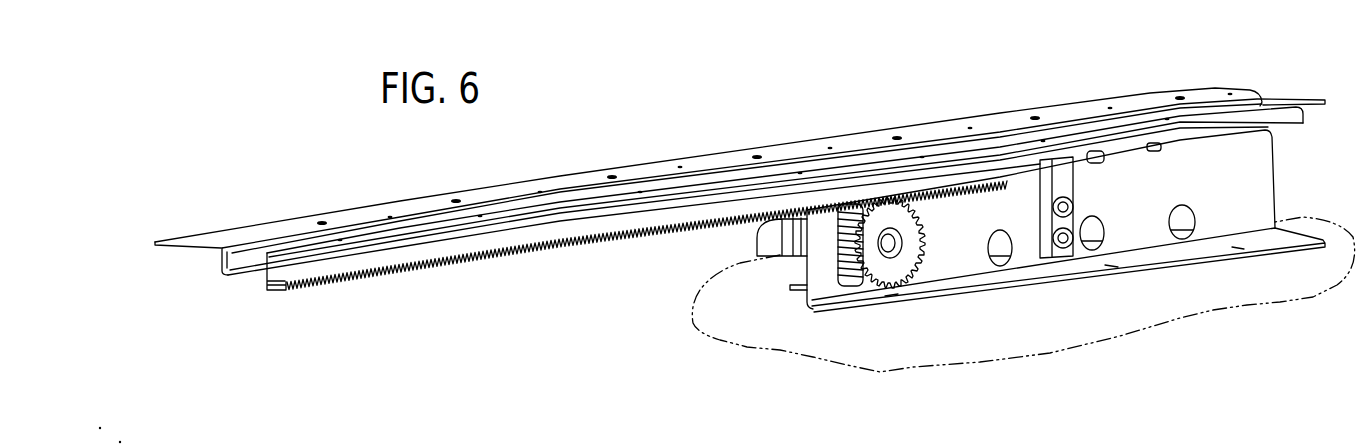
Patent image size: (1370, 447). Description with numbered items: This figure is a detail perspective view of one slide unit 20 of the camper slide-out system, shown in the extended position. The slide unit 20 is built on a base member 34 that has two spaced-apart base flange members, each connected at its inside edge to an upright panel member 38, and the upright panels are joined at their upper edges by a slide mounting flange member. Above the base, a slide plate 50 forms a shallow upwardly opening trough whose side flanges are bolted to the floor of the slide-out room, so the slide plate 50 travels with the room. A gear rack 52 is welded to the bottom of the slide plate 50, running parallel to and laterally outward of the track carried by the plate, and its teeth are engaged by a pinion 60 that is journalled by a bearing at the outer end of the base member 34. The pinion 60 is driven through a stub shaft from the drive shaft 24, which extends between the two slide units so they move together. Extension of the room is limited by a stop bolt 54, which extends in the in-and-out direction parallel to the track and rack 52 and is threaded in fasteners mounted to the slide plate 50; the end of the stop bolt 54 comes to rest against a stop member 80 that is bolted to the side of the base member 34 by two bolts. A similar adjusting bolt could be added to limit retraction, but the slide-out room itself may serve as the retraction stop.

The slide unit 20 is at (1261, 264).
The drive shaft 24 is at (750, 237).
The base member 34 is at (1152, 276).
The upright panel member 38 is at (1257, 182).
The slide plate 50 is at (1203, 89).
The gear rack 52 is at (348, 278).
The stop bolt 54 is at (1077, 157).
The pinion 60 is at (890, 272).
The stop member 80 is at (1043, 195).